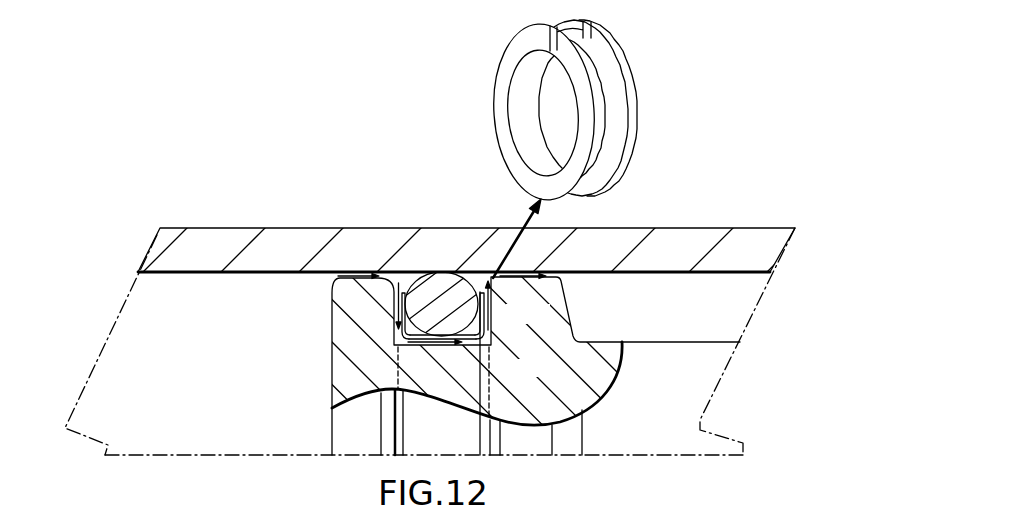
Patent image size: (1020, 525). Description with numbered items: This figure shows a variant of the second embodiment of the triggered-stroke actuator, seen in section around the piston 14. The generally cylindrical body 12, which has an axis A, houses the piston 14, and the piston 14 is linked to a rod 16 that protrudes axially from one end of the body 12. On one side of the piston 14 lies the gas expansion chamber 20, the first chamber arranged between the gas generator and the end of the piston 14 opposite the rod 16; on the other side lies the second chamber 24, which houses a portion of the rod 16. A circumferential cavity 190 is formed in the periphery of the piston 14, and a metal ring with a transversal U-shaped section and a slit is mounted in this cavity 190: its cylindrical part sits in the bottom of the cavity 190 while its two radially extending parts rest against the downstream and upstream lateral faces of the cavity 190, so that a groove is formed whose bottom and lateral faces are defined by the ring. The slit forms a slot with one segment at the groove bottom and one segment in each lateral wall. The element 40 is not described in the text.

The body 12 is at (760, 236).
The piston 14 is at (360, 297).
The rod 16 is at (698, 388).
The gas expansion chamber 20 is at (110, 355).
The second chamber 24 is at (650, 290).
The O-ring seal 40 is at (438, 290).
The circumferential cavity 190 is at (393, 358).
The axis A is at (150, 455).